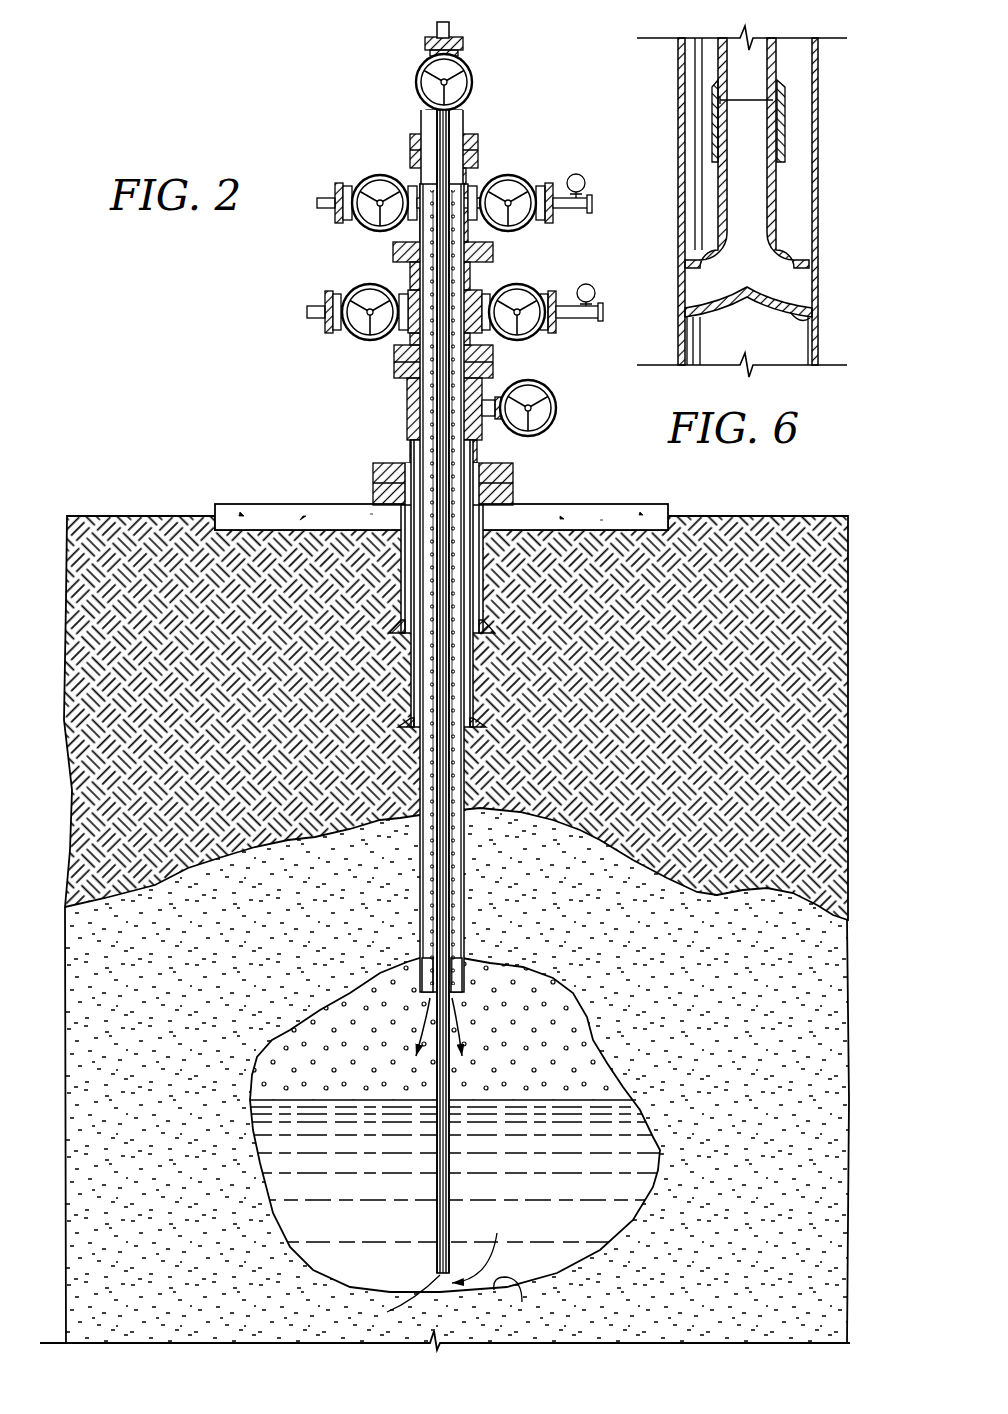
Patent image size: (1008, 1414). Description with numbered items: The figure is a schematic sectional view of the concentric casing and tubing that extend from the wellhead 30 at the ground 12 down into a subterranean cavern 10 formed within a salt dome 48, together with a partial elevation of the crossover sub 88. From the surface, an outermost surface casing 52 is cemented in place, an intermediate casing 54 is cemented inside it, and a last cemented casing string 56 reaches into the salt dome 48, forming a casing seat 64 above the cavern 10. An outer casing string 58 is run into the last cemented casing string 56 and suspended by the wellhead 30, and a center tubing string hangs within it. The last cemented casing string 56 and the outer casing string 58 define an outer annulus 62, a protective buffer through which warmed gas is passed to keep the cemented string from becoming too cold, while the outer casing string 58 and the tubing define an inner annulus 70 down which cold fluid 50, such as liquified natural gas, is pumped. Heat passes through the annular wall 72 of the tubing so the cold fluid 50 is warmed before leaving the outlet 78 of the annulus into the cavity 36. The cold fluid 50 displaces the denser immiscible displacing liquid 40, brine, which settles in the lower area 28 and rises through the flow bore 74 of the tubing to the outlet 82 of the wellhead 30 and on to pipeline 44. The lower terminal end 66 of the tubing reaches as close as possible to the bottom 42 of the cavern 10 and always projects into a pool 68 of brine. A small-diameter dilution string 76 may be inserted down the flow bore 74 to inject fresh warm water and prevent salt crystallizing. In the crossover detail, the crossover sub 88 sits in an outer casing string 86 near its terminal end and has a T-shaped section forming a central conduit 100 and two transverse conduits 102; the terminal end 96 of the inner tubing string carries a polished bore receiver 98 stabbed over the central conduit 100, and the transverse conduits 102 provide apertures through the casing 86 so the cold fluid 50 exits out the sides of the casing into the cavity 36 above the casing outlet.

In FIG. 2, the underground cavern 10 is at (457, 1142).
In FIG. 2, the ground 12 is at (745, 517).
In FIG. 2, the lower area of cavern 28 is at (637, 1140).
In FIG. 2, the wellhead 30 is at (464, 252).
In FIG. 2, the cavity 36 is at (580, 1055).
In FIG. 2, the immiscible displacing liquid 40 is at (318, 1218).
In FIG. 2, the bottom of cavern 42 is at (493, 1279).
In FIG. 2, the pipeline 44 is at (454, 27).
In FIG. 2, the salt dome 48 is at (715, 893).
In FIG. 2, the cold fluid 50 is at (566, 997).
In FIG. 2, the outermost surface casing 52 is at (487, 581).
In FIG. 2, the intermediate casing 54 is at (472, 660).
In FIG. 2, the last cemented casing string 56 is at (463, 798).
In FIG. 2, the outer casing string 58 is at (458, 869).
In FIG. 2, the outer annulus 62 is at (455, 776).
In FIG. 2, the casing seat 64 is at (472, 969).
In FIG. 2, the lower terminal end 66 is at (398, 1300).
In FIG. 2, the pool of brine 68 is at (618, 1200).
In FIG. 2, the inner annulus 70 is at (432, 452).
In FIG. 2, the annular wall 72 is at (441, 893).
In FIG. 2, the flow bore 74 is at (443, 397).
In FIG. 2, the dilution string 76 is at (440, 750).
In FIG. 2, the outlet of annulus 78 is at (456, 997).
In FIG. 2, the outlet of wellhead 82 is at (444, 22).
In FIG. 6, the outer casing string 86 is at (818, 210).
In FIG. 6, the crossover sub 88 is at (777, 200).
In FIG. 6, the terminal end of inner tubing string 96 is at (777, 60).
In FIG. 6, the polished bore receiver 98 is at (785, 145).
In FIG. 6, the central conduit 100 is at (773, 100).
In FIG. 6, the transverse conduits 102 is at (812, 325).